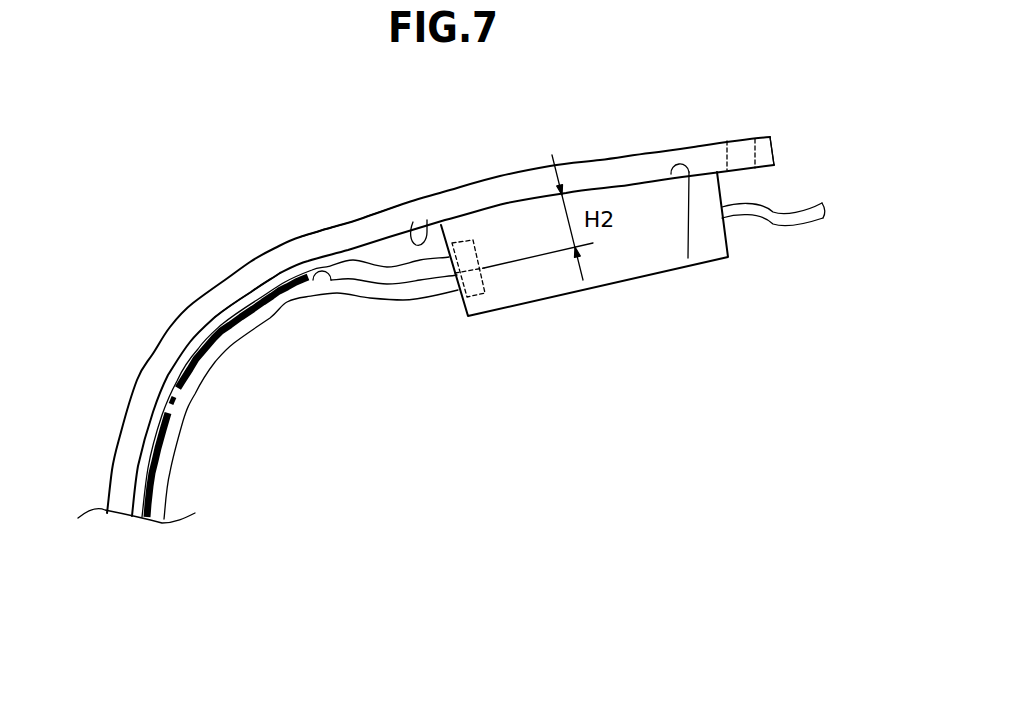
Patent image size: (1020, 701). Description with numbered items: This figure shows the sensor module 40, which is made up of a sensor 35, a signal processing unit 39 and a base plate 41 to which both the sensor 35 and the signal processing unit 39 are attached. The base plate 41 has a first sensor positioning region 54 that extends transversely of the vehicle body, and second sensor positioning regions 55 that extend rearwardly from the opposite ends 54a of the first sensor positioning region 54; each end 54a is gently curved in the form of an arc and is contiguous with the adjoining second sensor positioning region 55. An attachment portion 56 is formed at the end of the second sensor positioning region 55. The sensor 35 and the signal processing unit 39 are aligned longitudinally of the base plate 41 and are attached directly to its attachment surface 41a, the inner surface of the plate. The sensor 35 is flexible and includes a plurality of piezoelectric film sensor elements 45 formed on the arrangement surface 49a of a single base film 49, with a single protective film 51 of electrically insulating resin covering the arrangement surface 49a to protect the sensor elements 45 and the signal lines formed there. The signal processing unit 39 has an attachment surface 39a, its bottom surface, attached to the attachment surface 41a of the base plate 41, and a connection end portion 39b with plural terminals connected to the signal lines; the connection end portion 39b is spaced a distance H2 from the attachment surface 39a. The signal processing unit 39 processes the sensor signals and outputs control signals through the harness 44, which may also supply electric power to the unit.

The sensor 35 is at (430, 362).
The signal processing unit 39 is at (626, 281).
The attachment surface 39a is at (688, 258).
The connection end portion 39b is at (474, 297).
The module 40 is at (780, 140).
The base plate 41 is at (332, 98).
The attachment surface 41a is at (413, 222).
The harness 44 is at (799, 203).
The piezoelectric film sensor elements 45 is at (212, 341).
The base film 49 is at (340, 286).
The arrangement surface 49a is at (331, 280).
The protective film 51 is at (392, 275).
The first sensor positioning region 54 is at (111, 478).
The opposite ends 54a is at (205, 312).
The second sensor positioning region 55 is at (365, 214).
The attachment portions 56 is at (763, 137).